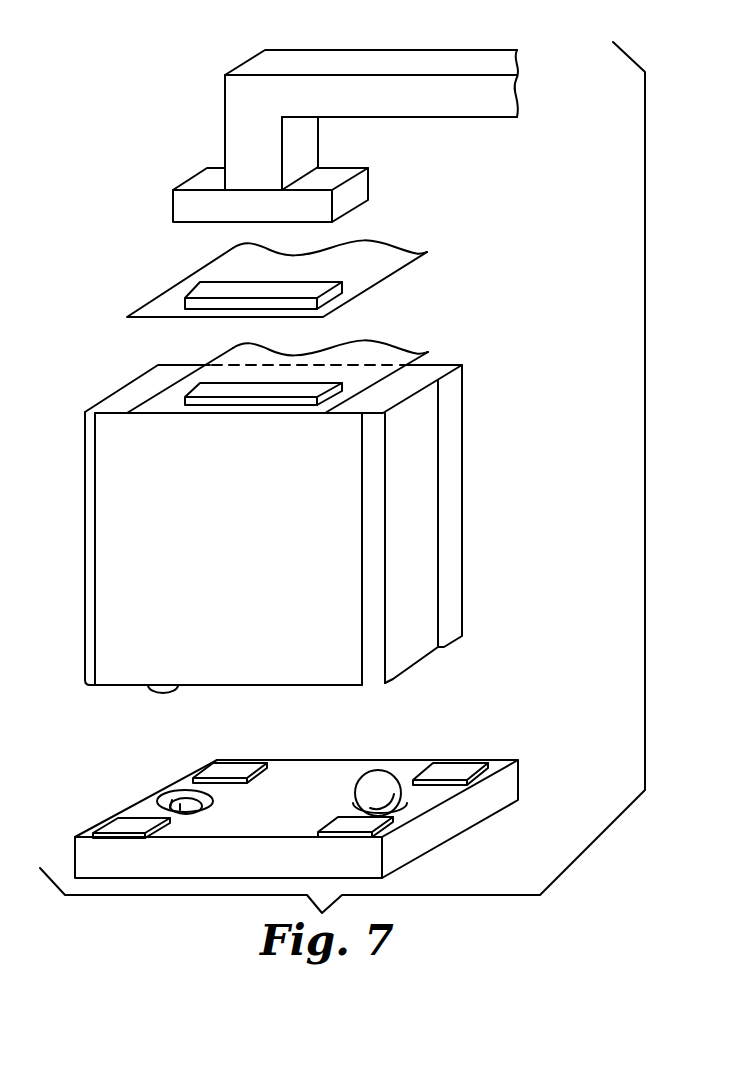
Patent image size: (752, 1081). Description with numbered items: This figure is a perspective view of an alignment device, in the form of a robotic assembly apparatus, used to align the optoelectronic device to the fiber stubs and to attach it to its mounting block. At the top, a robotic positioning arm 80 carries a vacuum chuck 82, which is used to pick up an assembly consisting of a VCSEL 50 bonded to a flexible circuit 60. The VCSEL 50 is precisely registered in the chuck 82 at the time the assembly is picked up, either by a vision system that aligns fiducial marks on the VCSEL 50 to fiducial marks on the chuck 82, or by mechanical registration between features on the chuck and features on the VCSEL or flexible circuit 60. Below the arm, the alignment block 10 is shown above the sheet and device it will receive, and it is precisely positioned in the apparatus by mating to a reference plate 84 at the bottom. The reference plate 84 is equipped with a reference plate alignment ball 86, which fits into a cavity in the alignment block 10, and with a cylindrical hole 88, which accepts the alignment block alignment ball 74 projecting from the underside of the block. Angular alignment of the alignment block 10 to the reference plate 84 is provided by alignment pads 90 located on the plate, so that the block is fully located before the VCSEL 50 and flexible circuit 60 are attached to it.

The alignment block 10 is at (104, 366).
The VCSEL 50 is at (209, 286).
The flexible circuit 60 is at (414, 236).
The alignment block alignment ball 74 is at (168, 691).
The robotic positioning arm 80 is at (410, 60).
The vacuum chuck 82 is at (194, 180).
The reference plate 84 is at (508, 783).
The reference plate alignment ball 86 is at (377, 782).
The cylindrical hole 88 is at (215, 799).
The alignment pads 90 is at (217, 767).